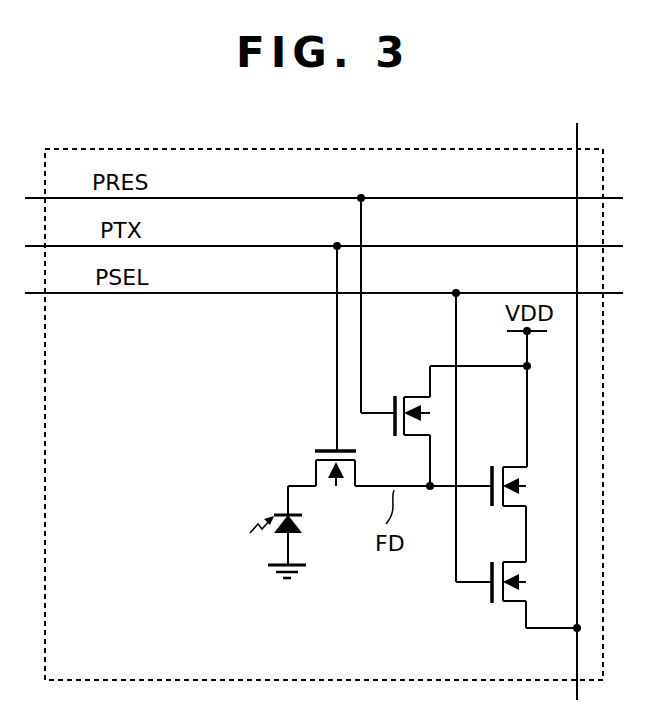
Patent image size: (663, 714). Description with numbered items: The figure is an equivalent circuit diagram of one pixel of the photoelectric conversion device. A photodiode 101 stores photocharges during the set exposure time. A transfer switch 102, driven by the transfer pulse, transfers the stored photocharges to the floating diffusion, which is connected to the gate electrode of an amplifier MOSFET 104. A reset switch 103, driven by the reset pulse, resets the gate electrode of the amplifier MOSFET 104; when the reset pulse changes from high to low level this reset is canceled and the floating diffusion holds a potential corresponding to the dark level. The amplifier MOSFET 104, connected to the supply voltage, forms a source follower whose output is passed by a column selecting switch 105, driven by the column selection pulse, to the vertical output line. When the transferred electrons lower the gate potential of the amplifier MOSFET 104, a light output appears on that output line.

The photodiode 101 is at (270, 537).
The transfer switch 102 is at (322, 448).
The reset switch 103 is at (395, 393).
The amplifier MOSFET 104 is at (502, 463).
The column selecting switch 105 is at (498, 604).